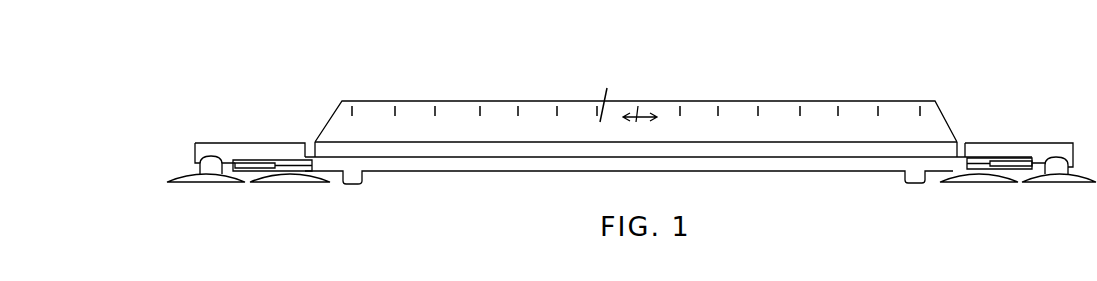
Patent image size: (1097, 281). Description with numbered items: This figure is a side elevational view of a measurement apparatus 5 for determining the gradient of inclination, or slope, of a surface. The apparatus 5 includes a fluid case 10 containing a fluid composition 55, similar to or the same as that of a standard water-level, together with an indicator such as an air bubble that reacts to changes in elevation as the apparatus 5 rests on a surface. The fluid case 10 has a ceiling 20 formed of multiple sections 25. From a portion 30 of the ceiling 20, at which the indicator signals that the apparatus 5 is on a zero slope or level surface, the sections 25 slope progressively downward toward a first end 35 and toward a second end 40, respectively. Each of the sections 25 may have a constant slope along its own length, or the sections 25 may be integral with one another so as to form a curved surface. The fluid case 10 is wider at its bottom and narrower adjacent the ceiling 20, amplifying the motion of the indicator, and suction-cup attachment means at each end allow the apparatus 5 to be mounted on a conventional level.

The measurement apparatus 5 is at (134, 58).
The fluid case 10 is at (790, 98).
The ceiling 20 is at (458, 100).
The sections 25 is at (570, 100).
The portion 30 is at (632, 100).
The first end 35 is at (316, 145).
The second end 40 is at (957, 145).
The fluid composition 55 is at (735, 117).